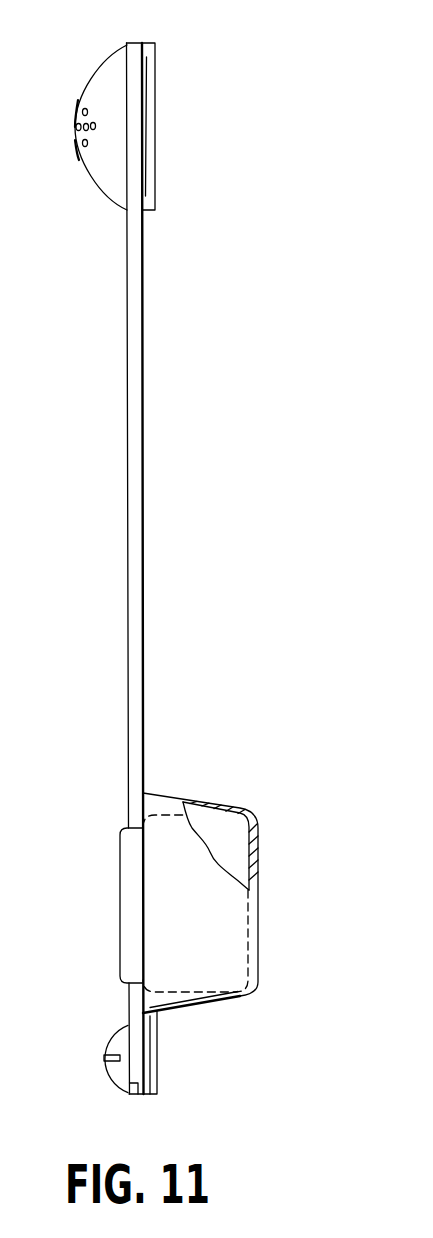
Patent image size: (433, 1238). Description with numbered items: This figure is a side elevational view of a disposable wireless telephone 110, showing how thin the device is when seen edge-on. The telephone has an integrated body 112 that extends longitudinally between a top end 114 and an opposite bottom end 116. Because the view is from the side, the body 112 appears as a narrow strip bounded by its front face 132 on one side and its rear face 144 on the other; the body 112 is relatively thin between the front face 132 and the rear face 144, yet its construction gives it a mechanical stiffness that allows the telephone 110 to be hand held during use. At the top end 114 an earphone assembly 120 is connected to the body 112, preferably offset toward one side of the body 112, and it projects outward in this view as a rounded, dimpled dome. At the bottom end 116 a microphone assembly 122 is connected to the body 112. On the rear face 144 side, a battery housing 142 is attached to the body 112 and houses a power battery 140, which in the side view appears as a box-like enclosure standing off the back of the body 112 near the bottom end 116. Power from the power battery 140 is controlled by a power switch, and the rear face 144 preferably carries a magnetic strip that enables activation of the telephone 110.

The disposable wireless telephone 110 is at (166, 567).
The integrated body 112 is at (136, 568).
The top end 114 is at (127, 44).
The bottom end 116 is at (136, 1097).
The earphone assembly 120 is at (99, 67).
The microphone assembly 122 is at (111, 1080).
The front face 132 is at (128, 497).
The power battery 140 is at (231, 822).
The battery housing 142 is at (211, 1006).
The rear face 144 is at (145, 437).